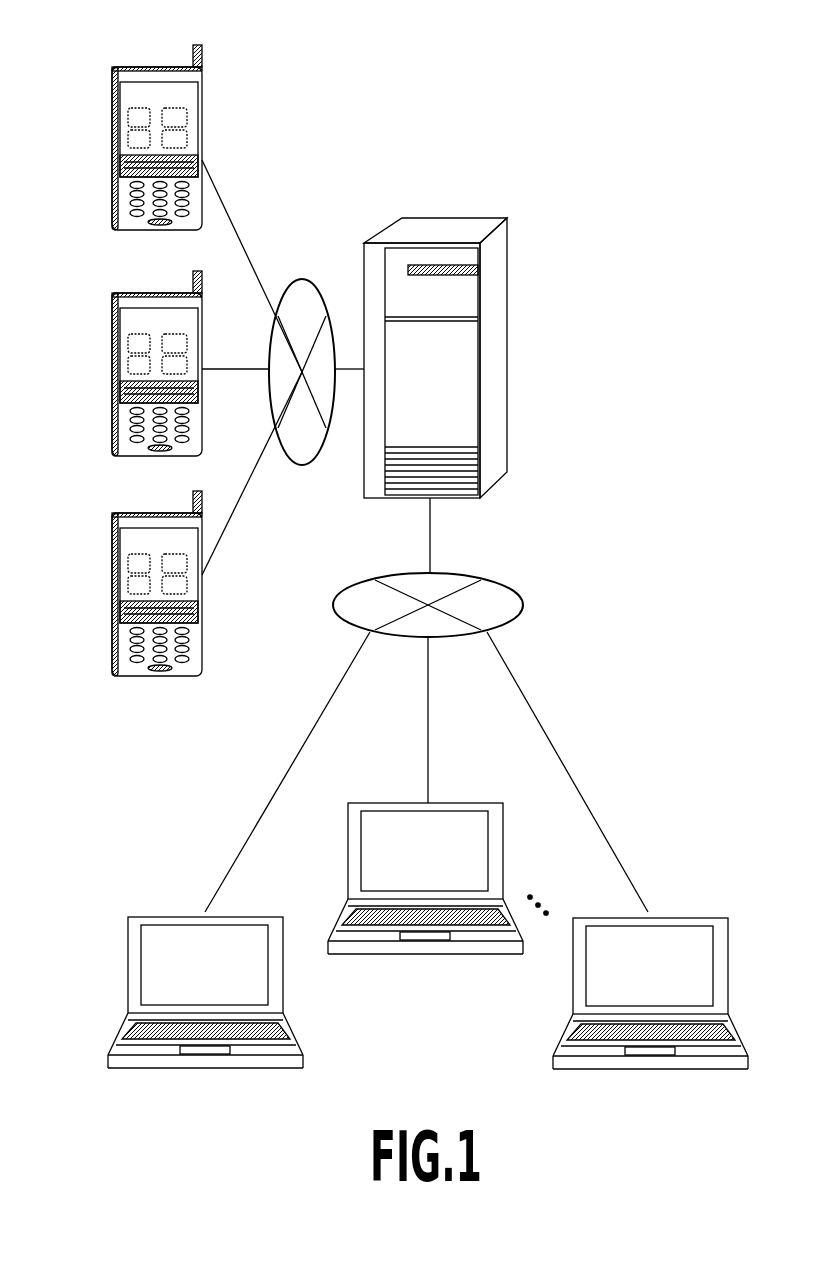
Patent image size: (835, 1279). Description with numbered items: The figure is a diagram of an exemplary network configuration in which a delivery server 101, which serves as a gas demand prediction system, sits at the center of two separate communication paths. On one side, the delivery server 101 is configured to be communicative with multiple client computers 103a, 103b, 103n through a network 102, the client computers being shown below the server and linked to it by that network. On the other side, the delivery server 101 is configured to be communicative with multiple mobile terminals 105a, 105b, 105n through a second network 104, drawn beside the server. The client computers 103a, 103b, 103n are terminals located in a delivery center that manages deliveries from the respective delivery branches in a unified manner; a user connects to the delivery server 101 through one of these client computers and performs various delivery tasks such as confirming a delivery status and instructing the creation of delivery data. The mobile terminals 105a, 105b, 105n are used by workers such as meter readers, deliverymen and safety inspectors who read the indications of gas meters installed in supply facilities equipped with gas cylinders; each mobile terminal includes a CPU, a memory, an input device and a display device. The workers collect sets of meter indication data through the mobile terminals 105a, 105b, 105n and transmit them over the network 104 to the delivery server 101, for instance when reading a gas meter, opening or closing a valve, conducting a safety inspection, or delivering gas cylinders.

The delivery server 101 is at (455, 220).
The network 102 is at (375, 578).
The client computer 103a is at (182, 912).
The client computer 103b is at (412, 802).
The client computer 103n is at (617, 913).
The network 104 is at (302, 280).
The mobile terminal 105a is at (140, 70).
The mobile terminal 105b is at (140, 296).
The mobile terminal 105n is at (140, 516).